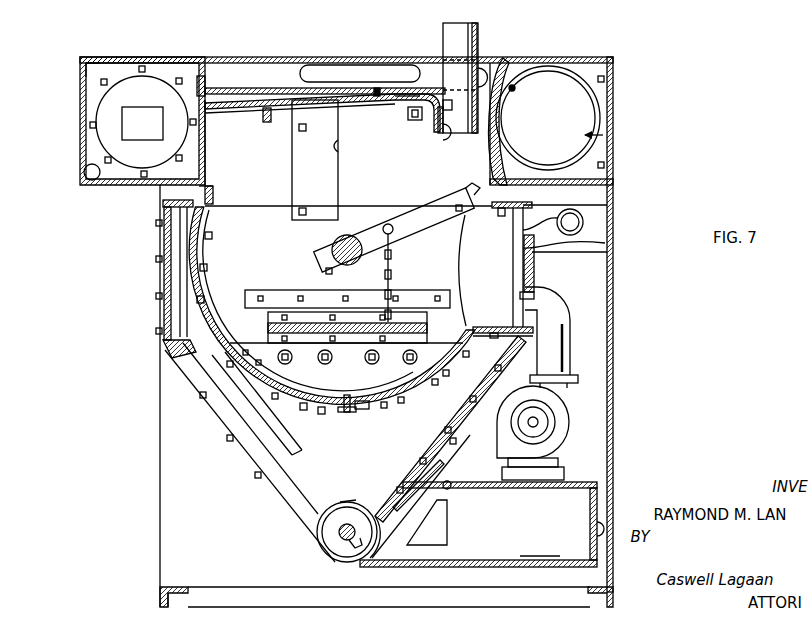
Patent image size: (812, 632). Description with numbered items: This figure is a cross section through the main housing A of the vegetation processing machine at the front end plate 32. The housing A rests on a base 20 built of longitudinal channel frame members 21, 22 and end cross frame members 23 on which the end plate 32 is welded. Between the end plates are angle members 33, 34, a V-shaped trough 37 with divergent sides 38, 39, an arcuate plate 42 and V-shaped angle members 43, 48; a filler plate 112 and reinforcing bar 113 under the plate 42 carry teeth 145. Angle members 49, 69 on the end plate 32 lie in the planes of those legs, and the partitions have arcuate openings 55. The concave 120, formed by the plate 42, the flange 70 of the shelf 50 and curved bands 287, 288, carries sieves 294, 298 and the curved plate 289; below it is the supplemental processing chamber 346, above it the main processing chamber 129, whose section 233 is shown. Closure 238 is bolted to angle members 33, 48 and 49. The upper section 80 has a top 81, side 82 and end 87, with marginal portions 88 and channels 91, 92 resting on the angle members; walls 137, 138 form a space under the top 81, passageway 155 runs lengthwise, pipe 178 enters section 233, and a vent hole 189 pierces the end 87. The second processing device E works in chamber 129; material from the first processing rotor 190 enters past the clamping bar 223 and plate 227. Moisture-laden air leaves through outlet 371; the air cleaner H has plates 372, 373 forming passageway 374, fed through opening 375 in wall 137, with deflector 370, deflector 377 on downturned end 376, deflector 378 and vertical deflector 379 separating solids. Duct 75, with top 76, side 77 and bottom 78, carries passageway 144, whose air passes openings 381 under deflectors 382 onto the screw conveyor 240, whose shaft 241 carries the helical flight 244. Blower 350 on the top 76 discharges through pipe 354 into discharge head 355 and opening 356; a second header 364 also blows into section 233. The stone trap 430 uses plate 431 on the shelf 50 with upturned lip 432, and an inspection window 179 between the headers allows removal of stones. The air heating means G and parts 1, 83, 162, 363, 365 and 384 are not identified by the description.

The direction arrow 1 is at (357, 498).
The base 20 is at (178, 584).
The longitudinal frame member 21 is at (595, 589).
The longitudinal frame member 22 is at (162, 594).
The end cross frame member 23 is at (283, 600).
The end plate 32 is at (180, 432).
The angle member 33 is at (494, 211).
The angle member 34 is at (215, 209).
The V-shaped trough 37 is at (278, 486).
The side of trough 38 is at (395, 478).
The side of trough 39 is at (290, 514).
The arcuate plate 42 is at (318, 398).
The V-shaped angle member 43 is at (208, 234).
The V-shaped angle member 48 is at (540, 345).
The angle member 49 is at (168, 273).
The shelf 50 is at (476, 334).
The arcuate opening 55 is at (246, 364).
The angle member 69 is at (200, 396).
The flange of shelf 70 is at (468, 337).
The duct 75 is at (606, 481).
The top of duct 76 is at (572, 483).
The side of duct 77 is at (590, 522).
The bottom of duct 78 is at (541, 566).
The upper section 80 is at (613, 62).
The top of upper section 81 is at (533, 61).
The side of upper section 82 is at (604, 119).
The box wall 83 is at (88, 75).
The end of upper section 87 is at (218, 62).
The marginal portion 88 is at (428, 212).
The channel 91 is at (503, 185).
The channel 92 is at (212, 191).
The filler plate 112 is at (342, 406).
The reinforcing bar 113 is at (358, 408).
The concave 120 is at (188, 318).
The main processing chamber 129 is at (406, 164).
The longitudinal wall 137 is at (206, 170).
The longitudinal wall 138 is at (522, 165).
The passageway 144 is at (485, 557).
The teeth 145 is at (346, 355).
The longitudinal passageway 155 is at (122, 72).
The deflector 162 is at (442, 528).
The pipe 178 is at (472, 33).
The inspection window 179 is at (137, 128).
The vent hole 189 is at (92, 186).
The first processing rotor 190 is at (268, 327).
The clamping bar 223 is at (292, 299).
The plate 227 is at (305, 375).
The chamber section 233 is at (328, 263).
The closure 238 is at (533, 296).
The screw conveyor 240 is at (333, 538).
The shaft 241 is at (340, 550).
The helical conveyor flight 244 is at (340, 520).
The curved band 287 is at (428, 370).
The curved band 288 is at (205, 300).
The curved plate 289 is at (188, 299).
The sieve 294 is at (290, 387).
The sieve 298 is at (402, 387).
The supplemental processing chamber 346 is at (280, 441).
The blower 350 is at (568, 423).
The pipe 354 is at (562, 334).
The discharge head 355 is at (555, 317).
The opening 356 is at (540, 307).
The port 363 is at (585, 223).
The discharge header 364 is at (553, 212).
The passage 365 is at (577, 247).
The deflector 370 is at (447, 143).
The air outlet opening 371 is at (315, 72).
The plate 372 is at (405, 97).
The plate 373 is at (281, 96).
The passageway 374 is at (245, 96).
The opening 375 is at (195, 90).
The downturned end 376 is at (397, 107).
The deflector 377 is at (428, 122).
The deflector 378 is at (268, 122).
The vertical deflector 379 is at (332, 146).
The opening 381 is at (450, 484).
The deflector 382 is at (393, 505).
The pivot 384 is at (512, 85).
The stone trap 430 is at (512, 318).
The plate 431 is at (495, 333).
The upturned lip 432 is at (468, 296).
The main housing A is at (613, 378).
The second processing device E is at (373, 248).
The air heating means G is at (610, 137).
The air cleaner H is at (377, 88).